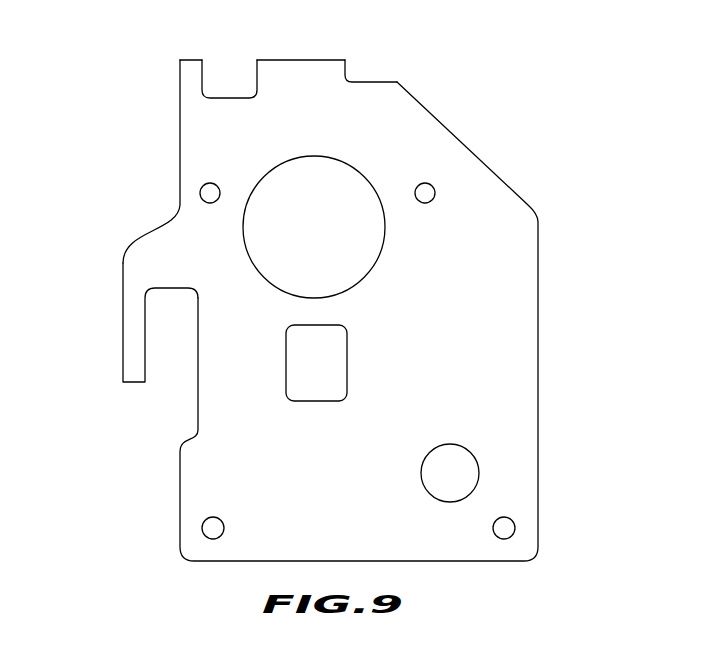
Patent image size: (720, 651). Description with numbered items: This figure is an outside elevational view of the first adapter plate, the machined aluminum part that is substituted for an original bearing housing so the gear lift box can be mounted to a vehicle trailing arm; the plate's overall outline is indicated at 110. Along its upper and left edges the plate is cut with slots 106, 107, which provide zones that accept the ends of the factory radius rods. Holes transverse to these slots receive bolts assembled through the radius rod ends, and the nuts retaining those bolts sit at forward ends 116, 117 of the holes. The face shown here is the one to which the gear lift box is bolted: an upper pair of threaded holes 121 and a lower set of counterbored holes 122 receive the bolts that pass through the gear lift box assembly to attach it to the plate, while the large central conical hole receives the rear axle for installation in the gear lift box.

The mounting plate 110 is at (552, 335).
The slot 106 is at (203, 66).
The forward end of hole 116 is at (348, 67).
The slot 107 is at (147, 360).
The forward end of hole 117 is at (288, 357).
The threaded holes 121 is at (203, 185).
The counterbored holes 122 is at (202, 523).